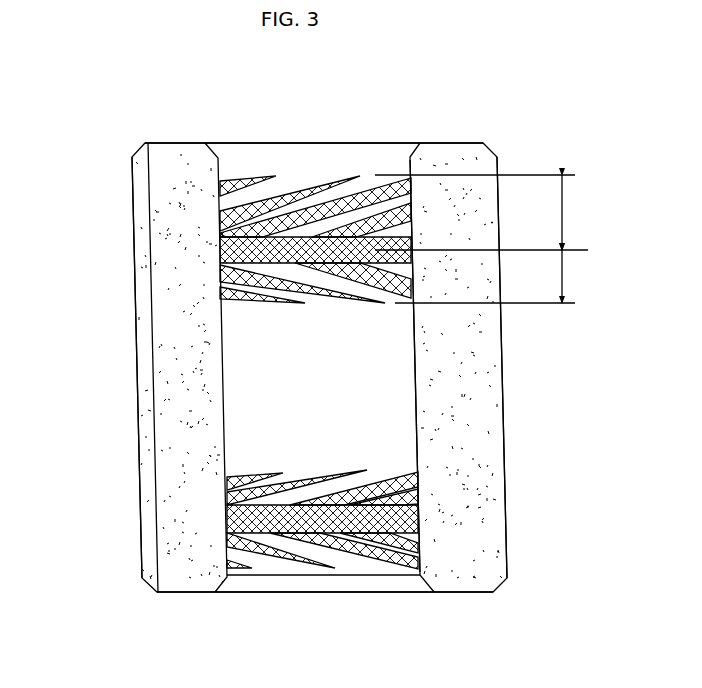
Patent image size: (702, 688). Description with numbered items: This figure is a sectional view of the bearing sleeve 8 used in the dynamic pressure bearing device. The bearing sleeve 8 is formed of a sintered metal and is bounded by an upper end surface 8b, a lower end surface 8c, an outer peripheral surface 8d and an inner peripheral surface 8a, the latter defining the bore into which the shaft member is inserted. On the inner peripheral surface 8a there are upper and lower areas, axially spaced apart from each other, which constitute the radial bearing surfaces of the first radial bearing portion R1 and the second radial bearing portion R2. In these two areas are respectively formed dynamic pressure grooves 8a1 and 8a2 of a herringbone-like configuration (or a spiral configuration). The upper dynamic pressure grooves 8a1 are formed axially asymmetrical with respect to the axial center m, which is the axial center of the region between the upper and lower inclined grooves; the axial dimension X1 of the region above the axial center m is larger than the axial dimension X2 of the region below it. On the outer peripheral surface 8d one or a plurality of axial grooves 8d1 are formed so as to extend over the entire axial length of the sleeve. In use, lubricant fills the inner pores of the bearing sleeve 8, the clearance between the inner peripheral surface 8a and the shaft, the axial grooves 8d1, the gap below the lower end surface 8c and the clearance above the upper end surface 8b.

The bearing sleeve 8 is at (97, 157).
The inner peripheral surface 8a is at (427, 386).
The dynamic pressure grooves 8a1 is at (274, 178).
The dynamic pressure grooves 8a2 is at (283, 478).
The upper end surface 8b is at (196, 143).
The lower end surface 8c is at (190, 594).
The outer peripheral surface 8d is at (136, 338).
The axial grooves 8d1 is at (152, 388).
The first radial bearing portion R1 is at (220, 252).
The second radial bearing portion R2 is at (226, 524).
The axial dimension X1 is at (485, 212).
The axial dimension X2 is at (495, 276).
The axial center m is at (494, 250).